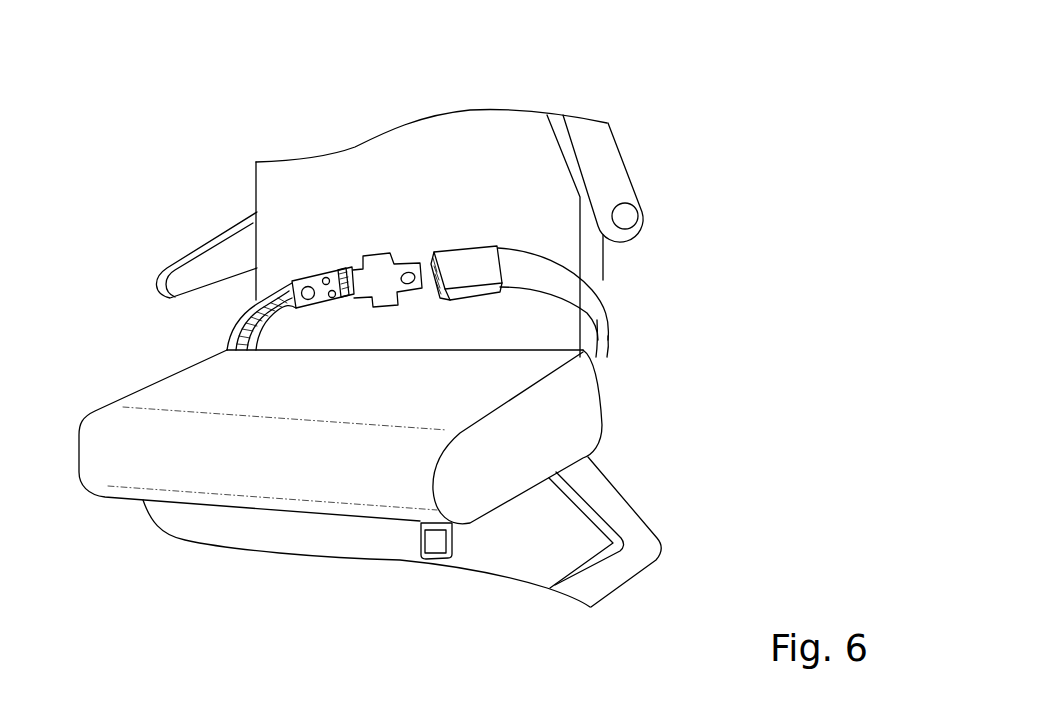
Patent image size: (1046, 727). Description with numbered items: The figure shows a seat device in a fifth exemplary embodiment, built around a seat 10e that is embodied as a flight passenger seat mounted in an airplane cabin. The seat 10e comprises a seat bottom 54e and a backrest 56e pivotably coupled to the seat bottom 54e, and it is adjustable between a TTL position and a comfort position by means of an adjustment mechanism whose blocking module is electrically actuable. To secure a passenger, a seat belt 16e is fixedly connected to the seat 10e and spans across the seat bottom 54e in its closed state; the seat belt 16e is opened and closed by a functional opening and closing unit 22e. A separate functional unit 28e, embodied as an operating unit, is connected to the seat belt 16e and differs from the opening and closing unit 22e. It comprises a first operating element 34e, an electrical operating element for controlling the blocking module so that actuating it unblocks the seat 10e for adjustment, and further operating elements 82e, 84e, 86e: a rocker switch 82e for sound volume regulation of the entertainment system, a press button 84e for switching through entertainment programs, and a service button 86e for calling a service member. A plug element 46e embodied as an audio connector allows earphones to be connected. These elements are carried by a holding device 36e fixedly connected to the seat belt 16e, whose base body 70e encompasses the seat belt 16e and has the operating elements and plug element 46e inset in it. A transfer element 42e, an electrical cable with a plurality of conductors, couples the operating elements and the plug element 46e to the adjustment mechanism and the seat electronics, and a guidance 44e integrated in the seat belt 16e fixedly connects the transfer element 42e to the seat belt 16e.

The seat 10e is at (396, 124).
The seat belt 16e is at (618, 333).
The functional opening and closing unit 22e is at (433, 238).
The functional unit 28e is at (306, 256).
The first operating element 34e is at (302, 302).
The holding device 36e is at (366, 336).
The transfer element 42e is at (258, 302).
The guidance 44e is at (240, 330).
The plug element 46e is at (309, 303).
The seat bottom 54e is at (507, 378).
The backrest 56e is at (503, 181).
The base body 70e is at (247, 233).
The operating element 82e is at (357, 264).
The operating element 84e is at (342, 268).
The operating element 86e is at (321, 310).